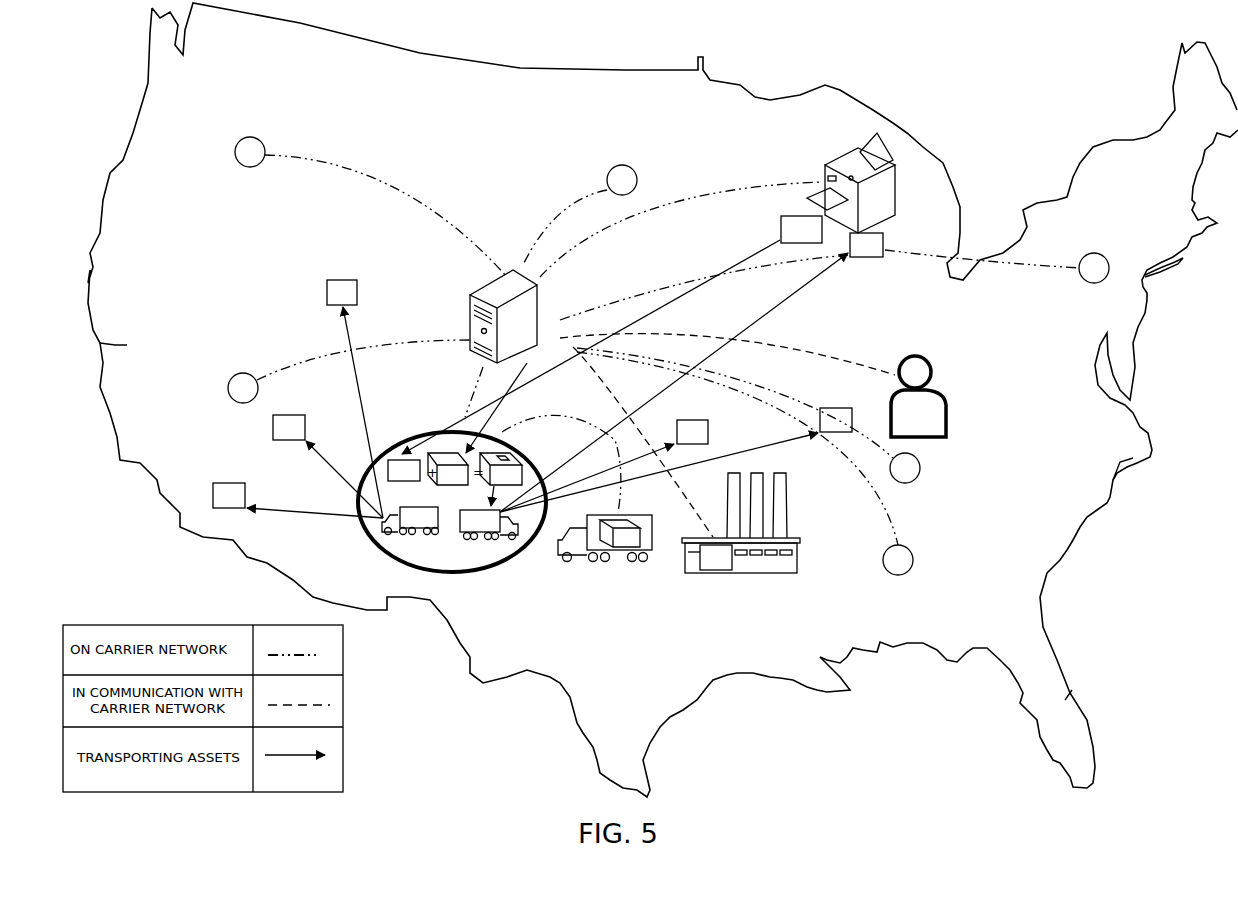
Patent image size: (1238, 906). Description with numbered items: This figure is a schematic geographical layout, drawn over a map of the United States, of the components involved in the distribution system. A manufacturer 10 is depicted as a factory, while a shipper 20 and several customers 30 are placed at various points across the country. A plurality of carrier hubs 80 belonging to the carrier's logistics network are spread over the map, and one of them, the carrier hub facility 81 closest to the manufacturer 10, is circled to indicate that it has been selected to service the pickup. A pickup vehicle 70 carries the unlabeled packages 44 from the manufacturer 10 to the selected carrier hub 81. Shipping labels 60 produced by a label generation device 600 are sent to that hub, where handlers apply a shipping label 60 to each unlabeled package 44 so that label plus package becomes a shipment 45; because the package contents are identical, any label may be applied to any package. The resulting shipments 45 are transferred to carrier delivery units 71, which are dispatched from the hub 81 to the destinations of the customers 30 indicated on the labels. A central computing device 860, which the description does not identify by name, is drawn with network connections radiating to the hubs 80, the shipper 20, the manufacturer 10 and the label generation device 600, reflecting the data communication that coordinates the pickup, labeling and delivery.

The manufacturer 10 is at (709, 564).
The shipper 20 is at (908, 415).
The customers 30 is at (859, 252).
The unlabeled packages 44 is at (448, 483).
The shipments 45 is at (501, 483).
The shipping labels 60 is at (794, 237).
The pickup vehicle 70 is at (605, 538).
The carrier delivery units 71 is at (412, 524).
The carrier hubs 80 is at (243, 159).
The carrier hub facility 81 is at (452, 481).
The label generation device 600 is at (865, 201).
The carrier server 860 is at (505, 328).